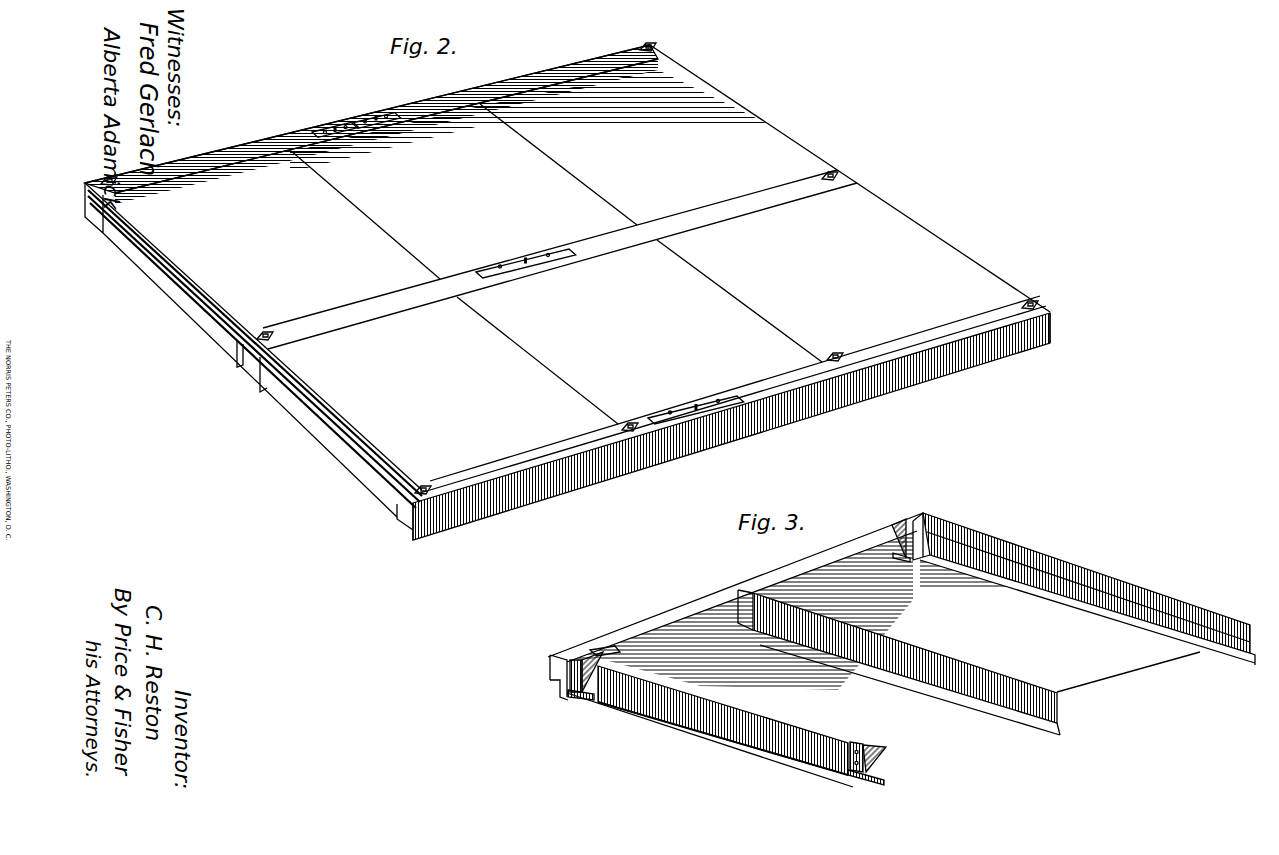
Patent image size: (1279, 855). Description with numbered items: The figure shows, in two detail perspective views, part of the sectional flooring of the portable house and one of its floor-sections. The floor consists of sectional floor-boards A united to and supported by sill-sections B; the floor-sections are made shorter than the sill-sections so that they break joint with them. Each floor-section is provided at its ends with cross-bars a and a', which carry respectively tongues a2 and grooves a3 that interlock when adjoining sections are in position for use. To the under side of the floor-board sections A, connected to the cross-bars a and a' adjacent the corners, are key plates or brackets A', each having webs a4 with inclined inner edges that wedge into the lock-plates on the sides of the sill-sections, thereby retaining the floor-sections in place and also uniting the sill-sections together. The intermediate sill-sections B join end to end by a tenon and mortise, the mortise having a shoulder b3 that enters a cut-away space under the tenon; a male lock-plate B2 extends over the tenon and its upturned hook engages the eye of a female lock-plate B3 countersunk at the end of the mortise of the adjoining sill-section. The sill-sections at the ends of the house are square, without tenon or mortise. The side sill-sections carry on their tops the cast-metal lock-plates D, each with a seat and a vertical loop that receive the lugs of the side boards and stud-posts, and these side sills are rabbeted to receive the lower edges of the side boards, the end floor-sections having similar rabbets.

In FIG. 2, the sectional floor-boards A is at (556, 247).
In FIG. 3, the sectional floor-boards A is at (883, 612).
In FIG. 2, the sill-sections B is at (553, 511).
In FIG. 2, the male lock-plate B2 is at (709, 398).
In FIG. 2, the female lock-plate B3 is at (518, 287).
In FIG. 2, the lock-plates D is at (426, 485).
In FIG. 3, the cross-bar a is at (926, 629).
In FIG. 2, the cross-bar a' is at (837, 341).
In FIG. 3, the cross-bar a' is at (734, 605).
In FIG. 3, the tongue a2 is at (960, 550).
In FIG. 2, the groove a3 is at (327, 427).
In FIG. 3, the groove a3 is at (560, 692).
In FIG. 3, the web a4 is at (887, 760).
In FIG. 3, the key plates or brackets A' is at (757, 625).
In FIG. 2, the shoulder b3 is at (995, 342).